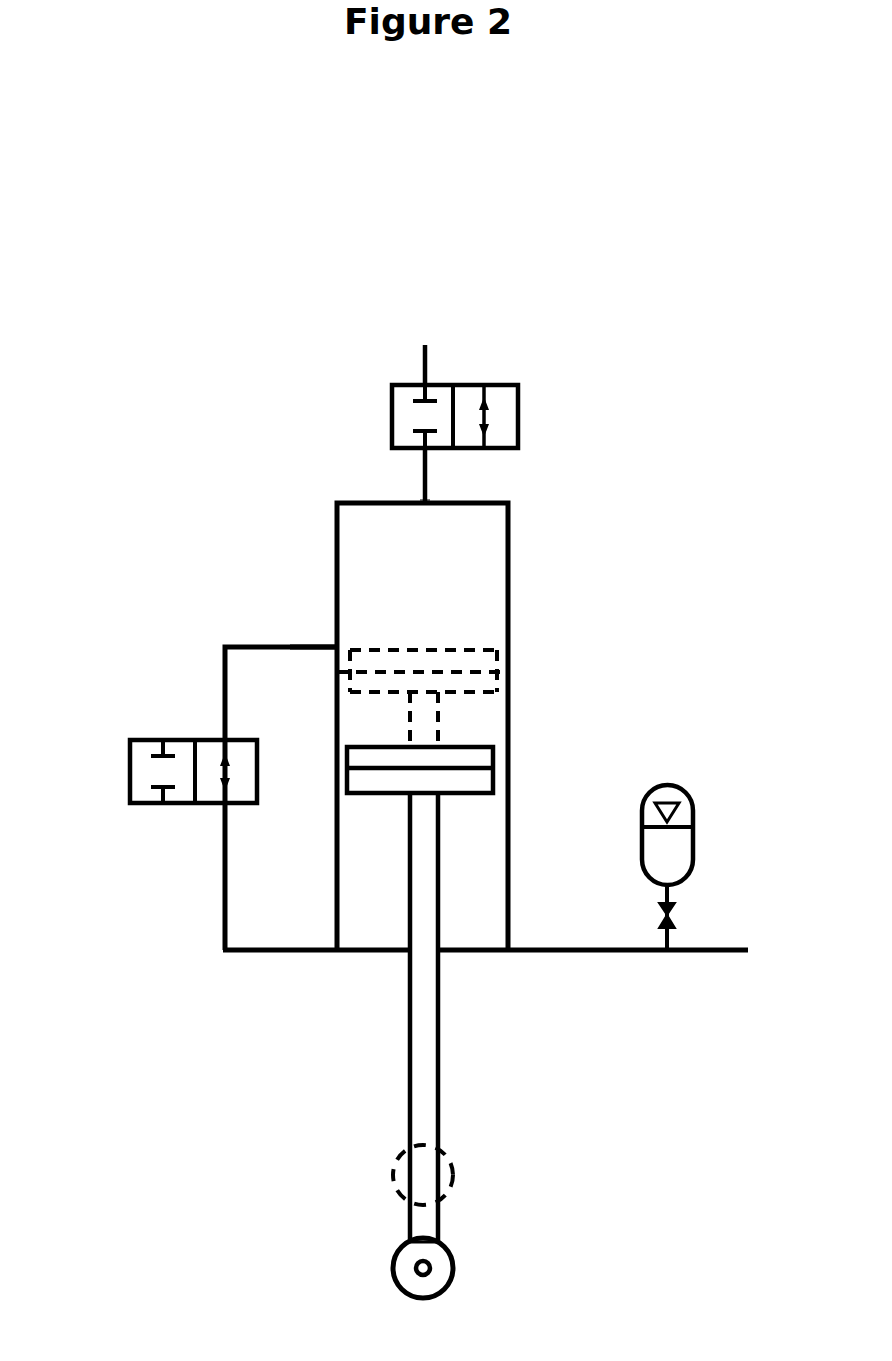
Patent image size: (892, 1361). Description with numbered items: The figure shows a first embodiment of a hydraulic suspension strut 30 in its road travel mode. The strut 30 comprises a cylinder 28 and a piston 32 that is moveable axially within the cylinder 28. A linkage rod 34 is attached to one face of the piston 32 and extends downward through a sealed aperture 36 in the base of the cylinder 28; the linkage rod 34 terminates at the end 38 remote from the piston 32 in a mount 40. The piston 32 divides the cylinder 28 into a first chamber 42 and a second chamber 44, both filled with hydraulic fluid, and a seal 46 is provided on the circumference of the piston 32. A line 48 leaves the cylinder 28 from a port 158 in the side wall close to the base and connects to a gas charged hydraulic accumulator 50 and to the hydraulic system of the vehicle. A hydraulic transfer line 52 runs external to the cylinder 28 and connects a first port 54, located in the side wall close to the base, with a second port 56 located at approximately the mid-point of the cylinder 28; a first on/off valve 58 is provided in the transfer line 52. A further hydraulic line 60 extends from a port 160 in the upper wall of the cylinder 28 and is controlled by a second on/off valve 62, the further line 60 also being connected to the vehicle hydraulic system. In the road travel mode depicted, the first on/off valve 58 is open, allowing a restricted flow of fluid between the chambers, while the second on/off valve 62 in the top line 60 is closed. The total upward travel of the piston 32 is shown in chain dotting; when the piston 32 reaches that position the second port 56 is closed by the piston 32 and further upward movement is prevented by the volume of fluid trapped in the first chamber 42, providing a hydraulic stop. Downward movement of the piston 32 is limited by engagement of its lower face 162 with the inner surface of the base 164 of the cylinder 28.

The cylinder 28 is at (510, 543).
The hydraulic suspension strut 30 is at (221, 423).
The piston 32 is at (488, 752).
The linkage rod 34 is at (441, 1053).
The sealed aperture 36 is at (405, 957).
The end 38 is at (400, 1245).
The mount 40 is at (455, 1268).
The first chamber 42 is at (420, 600).
The second chamber 44 is at (492, 812).
The seal 46 is at (347, 765).
The line 48 is at (640, 949).
The gas charged hydraulic accumulator 50 is at (660, 789).
The hydraulic transfer line 52 is at (222, 924).
The first port 54 is at (335, 951).
The second port 56 is at (296, 646).
The first on/off valve 58 is at (131, 744).
The further hydraulic line 60 is at (420, 483).
The second on/off valve 62 is at (518, 414).
The port 158 is at (505, 955).
The port 160 is at (425, 503).
The lower face 162 is at (465, 795).
The base 164 is at (372, 953).